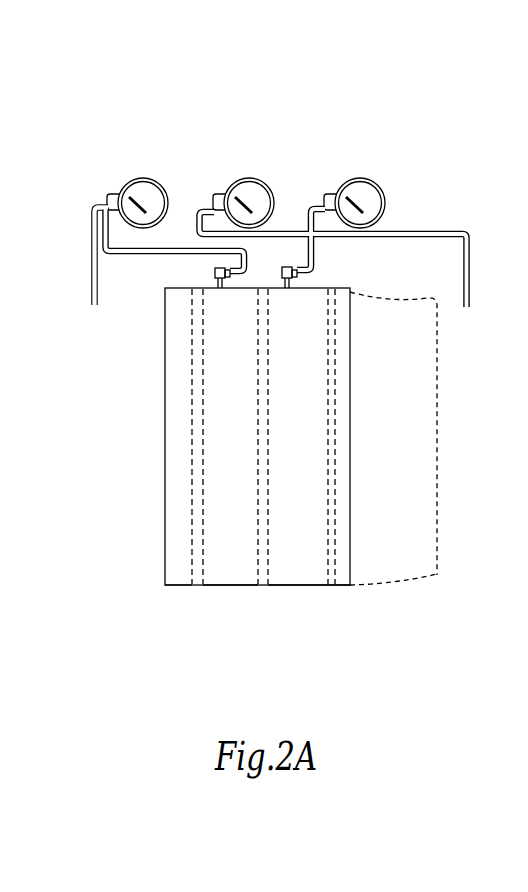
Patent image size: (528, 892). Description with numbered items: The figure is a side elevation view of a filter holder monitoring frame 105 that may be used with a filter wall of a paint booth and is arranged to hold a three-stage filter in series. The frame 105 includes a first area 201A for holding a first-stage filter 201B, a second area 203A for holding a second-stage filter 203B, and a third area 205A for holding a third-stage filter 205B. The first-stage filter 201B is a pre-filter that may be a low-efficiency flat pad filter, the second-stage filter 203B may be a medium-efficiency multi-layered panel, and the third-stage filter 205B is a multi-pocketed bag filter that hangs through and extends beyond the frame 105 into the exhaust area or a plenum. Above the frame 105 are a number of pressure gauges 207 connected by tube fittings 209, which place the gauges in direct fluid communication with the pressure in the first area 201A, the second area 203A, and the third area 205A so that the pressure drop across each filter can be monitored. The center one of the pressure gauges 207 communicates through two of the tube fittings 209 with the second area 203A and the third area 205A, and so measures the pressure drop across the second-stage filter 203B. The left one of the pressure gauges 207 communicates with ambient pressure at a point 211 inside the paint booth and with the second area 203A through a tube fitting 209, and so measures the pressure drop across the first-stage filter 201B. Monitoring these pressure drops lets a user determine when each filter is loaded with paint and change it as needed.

The filter holder monitoring frame 105 is at (163, 424).
The first area 201A is at (173, 601).
The first-stage filter 201B is at (198, 588).
The second area 203A is at (226, 602).
The second-stage filter 203B is at (263, 587).
The third area 205A is at (301, 598).
The third-stage filter 205B is at (387, 579).
The pressure gauges 207 is at (143, 178).
The tube fittings 209 is at (215, 272).
The point 211 is at (91, 252).